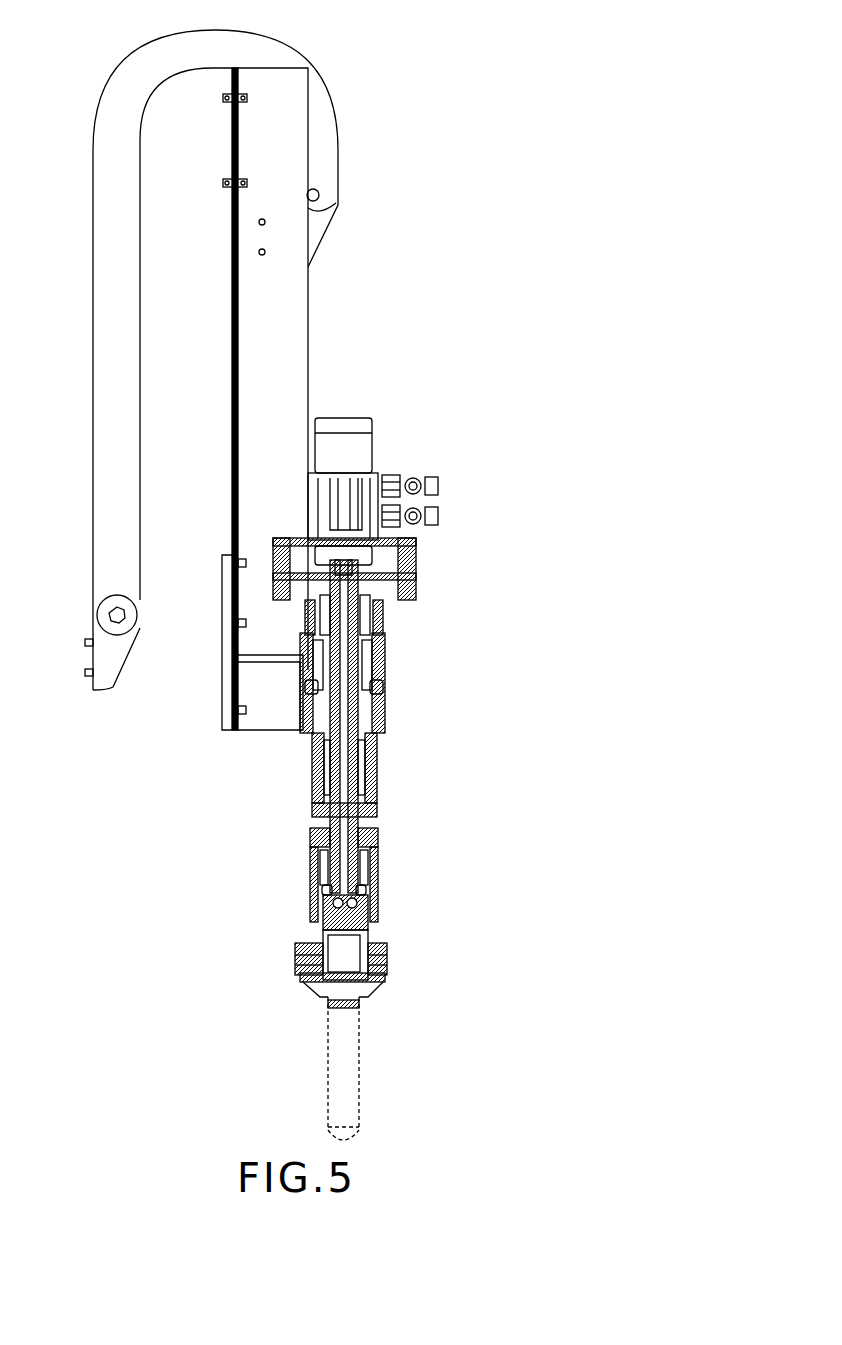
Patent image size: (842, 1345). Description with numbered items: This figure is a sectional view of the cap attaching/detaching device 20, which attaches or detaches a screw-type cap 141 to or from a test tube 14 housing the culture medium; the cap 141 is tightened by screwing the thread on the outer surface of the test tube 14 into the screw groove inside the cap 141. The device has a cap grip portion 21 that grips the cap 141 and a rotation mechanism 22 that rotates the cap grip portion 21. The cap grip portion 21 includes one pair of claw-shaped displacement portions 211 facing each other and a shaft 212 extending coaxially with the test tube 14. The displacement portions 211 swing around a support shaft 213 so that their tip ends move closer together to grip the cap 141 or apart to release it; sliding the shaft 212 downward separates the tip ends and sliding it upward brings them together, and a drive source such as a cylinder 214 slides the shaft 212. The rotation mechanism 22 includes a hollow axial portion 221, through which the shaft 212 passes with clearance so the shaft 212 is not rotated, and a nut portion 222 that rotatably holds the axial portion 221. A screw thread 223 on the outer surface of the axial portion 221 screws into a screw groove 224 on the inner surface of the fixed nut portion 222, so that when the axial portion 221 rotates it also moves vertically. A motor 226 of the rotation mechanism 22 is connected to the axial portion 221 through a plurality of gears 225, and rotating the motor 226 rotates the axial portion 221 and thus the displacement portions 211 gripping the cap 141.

The test tube 14 is at (362, 1110).
The cap 141 is at (335, 1010).
The cap attaching/detaching device 20 is at (415, 152).
The cap grip portion 21 is at (389, 959).
The displacement portions 211 is at (305, 985).
The shaft 212 is at (377, 797).
The support shaft 213 is at (370, 928).
The cylinder 214 is at (376, 472).
The rotation mechanism 22 is at (380, 860).
The axial portion 221 is at (380, 748).
The nut portion 222 is at (384, 708).
The screw thread 223 is at (378, 655).
The screw groove 224 is at (306, 735).
The gears 225 is at (410, 570).
The motor 226 is at (373, 430).